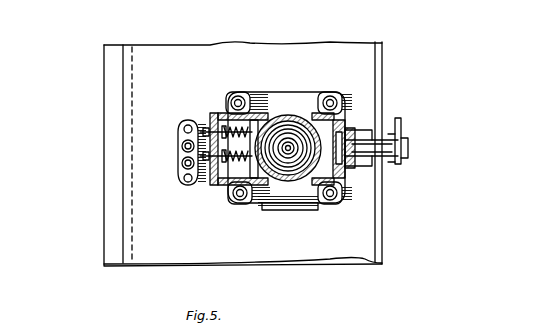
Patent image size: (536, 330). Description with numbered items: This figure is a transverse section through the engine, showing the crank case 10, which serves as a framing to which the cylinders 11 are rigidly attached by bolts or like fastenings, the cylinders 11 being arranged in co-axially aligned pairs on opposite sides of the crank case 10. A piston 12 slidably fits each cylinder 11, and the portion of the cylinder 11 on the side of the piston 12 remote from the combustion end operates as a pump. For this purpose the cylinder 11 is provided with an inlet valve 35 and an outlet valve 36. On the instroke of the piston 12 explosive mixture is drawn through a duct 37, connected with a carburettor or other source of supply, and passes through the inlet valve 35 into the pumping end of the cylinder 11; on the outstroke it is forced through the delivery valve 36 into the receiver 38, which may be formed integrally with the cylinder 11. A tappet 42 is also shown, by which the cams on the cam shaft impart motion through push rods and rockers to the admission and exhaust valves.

The crank case 10 is at (383, 81).
The cylinder 11 is at (296, 206).
The piston 12 is at (300, 112).
The inlet valve 35 is at (358, 166).
The outlet valve 36 is at (210, 110).
The duct 37 is at (404, 152).
The receiver 38 is at (216, 196).
The tappet 42 is at (178, 153).